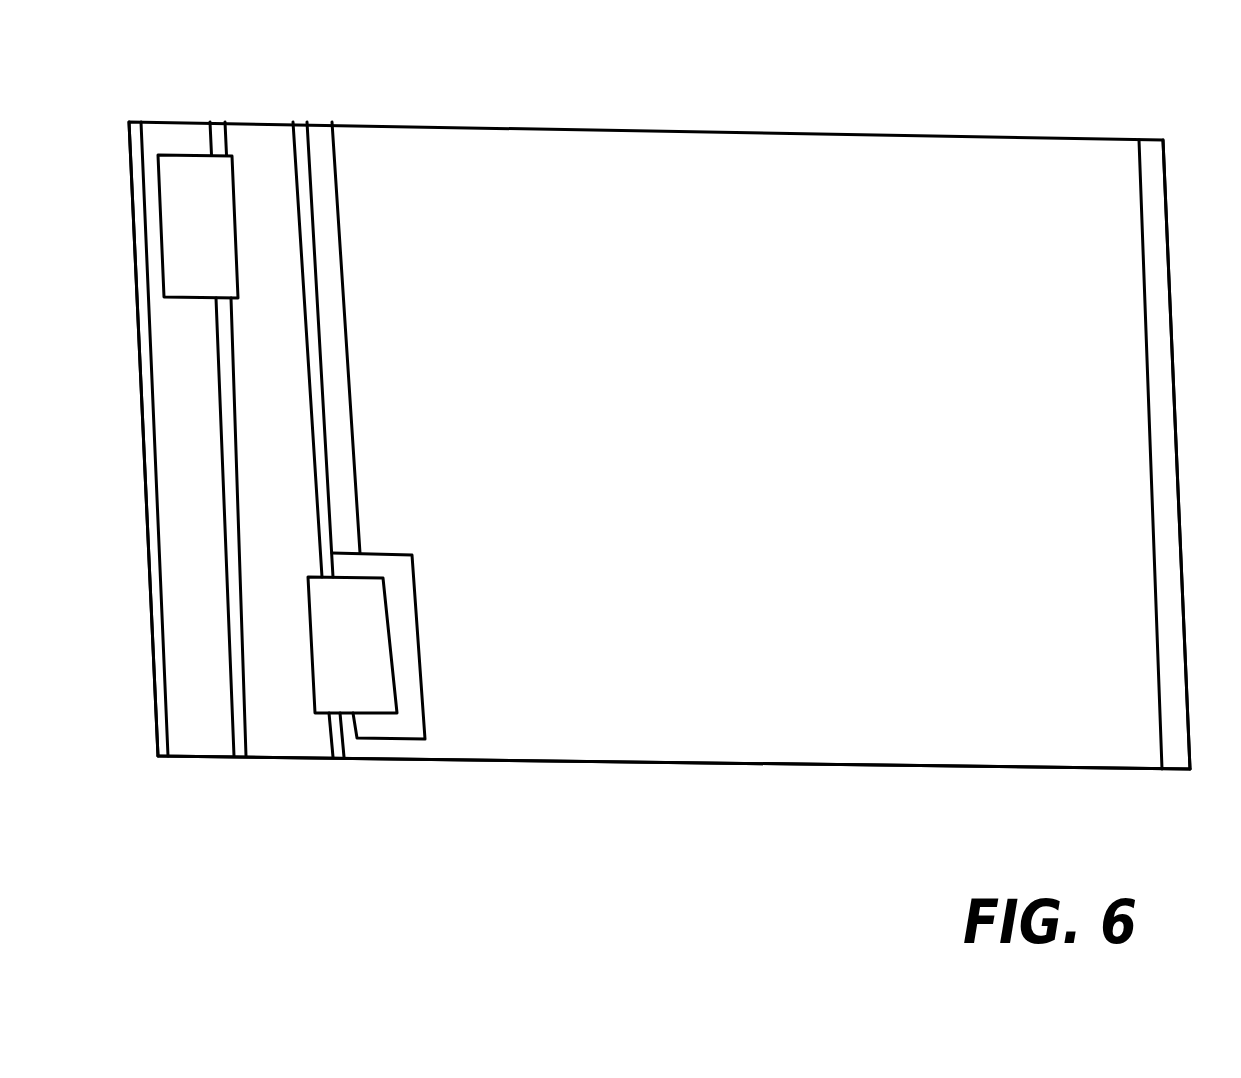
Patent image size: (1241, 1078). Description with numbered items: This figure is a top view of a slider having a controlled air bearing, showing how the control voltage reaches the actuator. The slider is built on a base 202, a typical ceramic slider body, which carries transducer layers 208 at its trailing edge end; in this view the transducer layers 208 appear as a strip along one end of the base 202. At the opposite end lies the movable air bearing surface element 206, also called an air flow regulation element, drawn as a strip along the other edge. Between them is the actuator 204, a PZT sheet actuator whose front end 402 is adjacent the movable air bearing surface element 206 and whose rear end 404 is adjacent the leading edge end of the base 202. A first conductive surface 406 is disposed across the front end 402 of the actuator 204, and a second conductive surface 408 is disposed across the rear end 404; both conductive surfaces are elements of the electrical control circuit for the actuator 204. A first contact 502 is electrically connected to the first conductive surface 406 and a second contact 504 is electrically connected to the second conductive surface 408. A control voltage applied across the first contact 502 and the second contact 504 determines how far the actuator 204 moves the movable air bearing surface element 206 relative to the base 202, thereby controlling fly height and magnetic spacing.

The base 202 is at (903, 135).
The actuator 204 is at (290, 742).
The movable air bearing surface element 206 is at (178, 744).
The transducer layers 208 is at (1147, 140).
The front end of actuator 402 is at (222, 122).
The rear end of actuator 404 is at (298, 125).
The first conductive surface 406 is at (238, 742).
The second conductive surface 408 is at (341, 742).
The first contact 502 is at (197, 198).
The second contact 504 is at (385, 713).